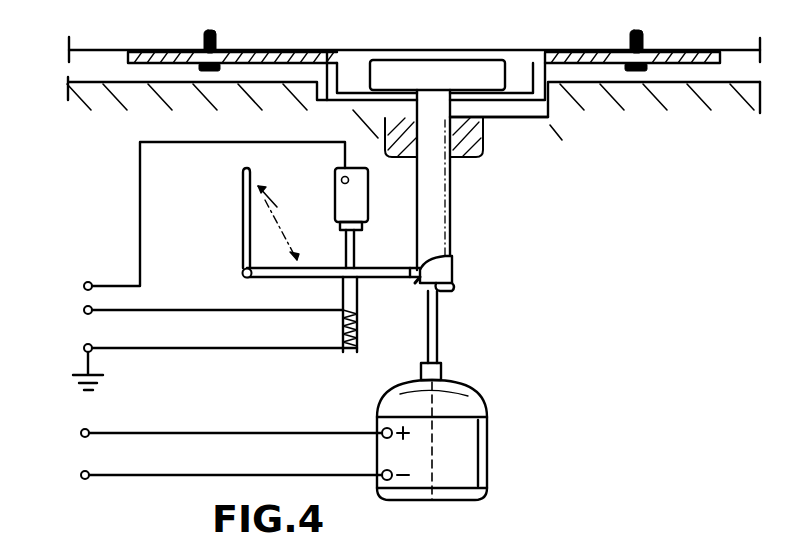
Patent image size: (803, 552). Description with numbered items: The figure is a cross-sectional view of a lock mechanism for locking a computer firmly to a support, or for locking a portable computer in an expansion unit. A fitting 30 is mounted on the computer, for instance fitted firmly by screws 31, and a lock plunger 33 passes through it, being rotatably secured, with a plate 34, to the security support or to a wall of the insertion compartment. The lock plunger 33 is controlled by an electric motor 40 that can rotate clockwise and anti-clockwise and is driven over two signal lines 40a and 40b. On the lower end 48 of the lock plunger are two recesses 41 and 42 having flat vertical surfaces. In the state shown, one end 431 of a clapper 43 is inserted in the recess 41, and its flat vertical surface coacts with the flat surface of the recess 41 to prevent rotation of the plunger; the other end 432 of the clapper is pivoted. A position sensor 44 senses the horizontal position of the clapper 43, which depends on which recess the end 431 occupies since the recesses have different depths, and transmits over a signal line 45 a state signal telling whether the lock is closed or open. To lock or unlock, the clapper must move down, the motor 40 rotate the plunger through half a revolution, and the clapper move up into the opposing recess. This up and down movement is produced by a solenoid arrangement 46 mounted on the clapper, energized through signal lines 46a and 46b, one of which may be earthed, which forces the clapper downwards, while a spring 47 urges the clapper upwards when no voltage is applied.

The fitting 30 is at (549, 58).
The bolt 31 is at (217, 40).
The lock plunger 33 is at (452, 184).
The plate 34 is at (493, 78).
The electric motor 40 is at (488, 458).
The signal line 40a is at (203, 433).
The signal line 40b is at (203, 475).
The recess 41 is at (451, 262).
The recess 42 is at (454, 288).
The clapper 43 is at (364, 263).
The end of the clapper 431 is at (420, 278).
The other end of the clapper 432 is at (242, 273).
The position sensor 44 is at (360, 188).
The signal line 45 is at (192, 216).
The solenoid arrangement 46 is at (347, 290).
The signal line 46a is at (185, 309).
The signal line 46b is at (190, 361).
The spring 47 is at (298, 182).
The lower end of the lock plunger 48 is at (438, 296).